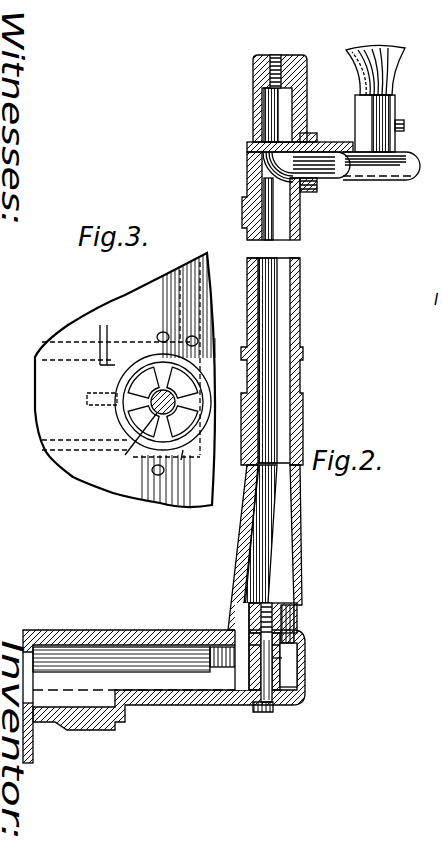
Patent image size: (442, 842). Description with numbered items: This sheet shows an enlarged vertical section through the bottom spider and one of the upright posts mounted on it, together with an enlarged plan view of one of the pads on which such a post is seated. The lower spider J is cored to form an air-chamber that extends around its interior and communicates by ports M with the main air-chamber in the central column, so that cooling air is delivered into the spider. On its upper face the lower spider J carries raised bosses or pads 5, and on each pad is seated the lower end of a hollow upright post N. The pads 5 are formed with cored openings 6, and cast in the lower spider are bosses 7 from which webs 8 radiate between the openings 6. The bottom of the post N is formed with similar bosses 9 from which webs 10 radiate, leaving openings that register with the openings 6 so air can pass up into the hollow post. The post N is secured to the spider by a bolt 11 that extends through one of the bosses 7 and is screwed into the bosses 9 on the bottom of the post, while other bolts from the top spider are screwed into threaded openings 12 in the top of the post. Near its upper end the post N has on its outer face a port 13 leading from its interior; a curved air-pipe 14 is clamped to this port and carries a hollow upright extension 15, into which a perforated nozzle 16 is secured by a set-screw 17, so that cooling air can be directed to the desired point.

In FIG. 2, the threaded openings 12 is at (278, 56).
In FIG. 2, the port 13 is at (316, 188).
In FIG. 2, the curved air-pipes 14 is at (318, 146).
In FIG. 2, the hollow upright extensions 15 is at (396, 108).
In FIG. 2, the perforated nozzles 16 is at (404, 56).
In FIG. 2, the set-screws 17 is at (405, 126).
In FIG. 2, the upright posts N is at (298, 560).
In FIG. 2, the bosses 9 is at (283, 612).
In FIG. 2, the lower spider J is at (70, 630).
In FIG. 3, the lower spider J is at (158, 284).
In FIG. 2, the ports M is at (115, 665).
In FIG. 3, the ports M is at (80, 362).
In FIG. 2, the webs 10 is at (238, 627).
In FIG. 2, the cored openings 6 is at (287, 638).
In FIG. 3, the cored openings 6 is at (203, 417).
In FIG. 2, the bolt 11 is at (263, 703).
In FIG. 3, the bolt 11 is at (125, 455).
In FIG. 2, the pads 5 is at (297, 640).
In FIG. 3, the pads 5 is at (181, 460).
In FIG. 2, the bosses 7 is at (282, 658).
In FIG. 3, the bosses 7 is at (150, 412).
In FIG. 3, the webs 8 is at (162, 356).